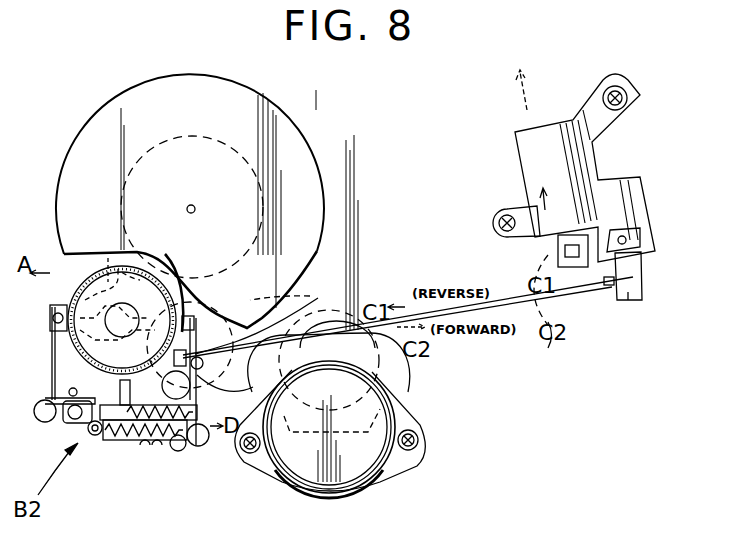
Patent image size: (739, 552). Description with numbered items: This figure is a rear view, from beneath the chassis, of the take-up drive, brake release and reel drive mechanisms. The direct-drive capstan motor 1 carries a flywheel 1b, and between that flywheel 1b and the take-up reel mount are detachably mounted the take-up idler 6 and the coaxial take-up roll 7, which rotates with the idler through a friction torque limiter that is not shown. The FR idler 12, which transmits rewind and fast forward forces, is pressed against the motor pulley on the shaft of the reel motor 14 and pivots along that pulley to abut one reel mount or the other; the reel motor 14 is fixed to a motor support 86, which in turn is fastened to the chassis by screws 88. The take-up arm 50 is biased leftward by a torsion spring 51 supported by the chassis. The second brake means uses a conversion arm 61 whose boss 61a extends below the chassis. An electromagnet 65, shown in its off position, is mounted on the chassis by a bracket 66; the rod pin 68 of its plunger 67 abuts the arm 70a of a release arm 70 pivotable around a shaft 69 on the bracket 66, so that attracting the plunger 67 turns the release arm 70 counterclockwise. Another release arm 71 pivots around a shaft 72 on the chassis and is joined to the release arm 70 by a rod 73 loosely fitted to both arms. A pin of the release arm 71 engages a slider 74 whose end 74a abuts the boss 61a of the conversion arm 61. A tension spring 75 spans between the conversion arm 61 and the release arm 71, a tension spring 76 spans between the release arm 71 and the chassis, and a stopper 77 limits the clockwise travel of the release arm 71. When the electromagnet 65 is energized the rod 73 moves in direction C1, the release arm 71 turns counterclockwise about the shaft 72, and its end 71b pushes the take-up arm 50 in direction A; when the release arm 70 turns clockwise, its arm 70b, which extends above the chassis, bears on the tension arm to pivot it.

The capstan motor 1 is at (297, 133).
The flywheel 1b is at (220, 136).
The take-up idler 6 is at (68, 300).
The take-up roll 7 is at (108, 258).
The FR idler 12 is at (396, 370).
The reel motor 14 is at (386, 470).
The take-up arm 50 is at (183, 281).
The torsion spring 51 is at (52, 357).
The conversion arm 61 is at (70, 427).
The boss 61a is at (93, 437).
The electromagnet 65 is at (520, 165).
The bracket 66 is at (612, 112).
The plunger 67 is at (535, 240).
The rod pin 68 is at (572, 275).
The shaft 69 is at (628, 238).
The release arm 70 is at (641, 268).
The arm 70a is at (564, 266).
The arm 70b is at (640, 302).
The release arm 71 is at (180, 455).
The end 71b is at (202, 311).
The shaft 72 is at (253, 400).
The rod 73 is at (547, 349).
The slider 74 is at (200, 447).
The end 74a is at (105, 442).
The tension spring 75 is at (132, 442).
The tension spring 76 is at (140, 403).
The stopper 77 is at (267, 317).
The motor support 86 is at (413, 425).
The screws 88 is at (252, 455).